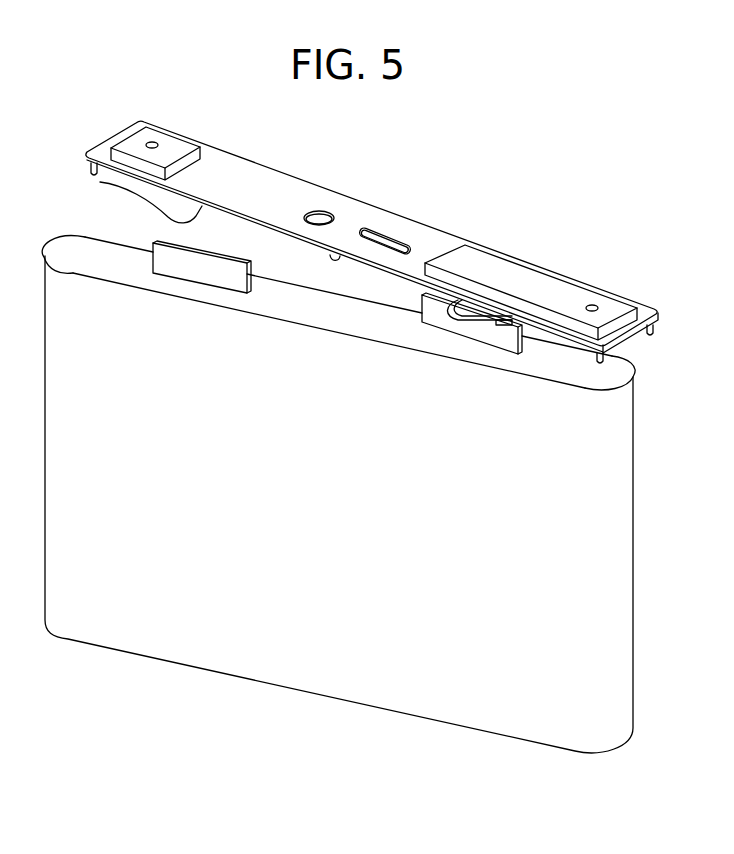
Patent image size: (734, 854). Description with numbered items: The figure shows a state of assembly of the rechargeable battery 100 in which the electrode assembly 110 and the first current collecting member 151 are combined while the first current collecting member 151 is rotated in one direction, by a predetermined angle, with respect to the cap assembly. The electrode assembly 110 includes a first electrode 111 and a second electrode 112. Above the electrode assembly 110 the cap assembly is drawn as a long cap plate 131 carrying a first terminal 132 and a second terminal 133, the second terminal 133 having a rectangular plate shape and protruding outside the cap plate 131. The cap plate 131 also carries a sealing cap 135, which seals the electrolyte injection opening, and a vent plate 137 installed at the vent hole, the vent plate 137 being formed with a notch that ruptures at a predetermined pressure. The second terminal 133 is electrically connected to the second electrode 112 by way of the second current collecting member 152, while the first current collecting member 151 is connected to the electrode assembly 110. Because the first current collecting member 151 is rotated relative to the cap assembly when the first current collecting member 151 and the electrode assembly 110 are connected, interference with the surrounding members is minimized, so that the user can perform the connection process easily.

The rechargeable battery 100 is at (457, 128).
The electrode assembly 110 is at (640, 558).
The first electrode 111 is at (443, 328).
The second electrode 112 is at (167, 263).
The cap plate 131 is at (277, 187).
The first terminal 132 is at (525, 285).
The second terminal 133 is at (170, 147).
The sealing cap 135 is at (323, 212).
The vent plate 137 is at (383, 236).
The first current collecting member 151 is at (463, 321).
The second current collecting member 152 is at (100, 182).